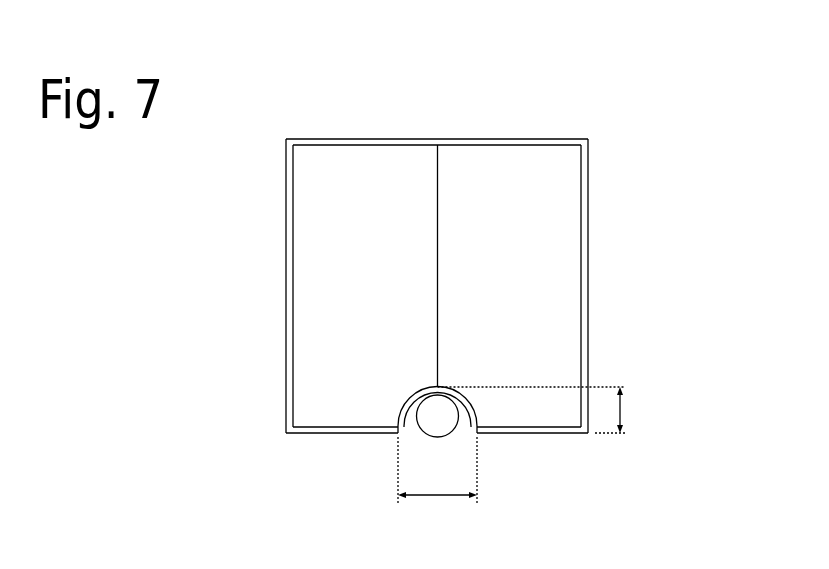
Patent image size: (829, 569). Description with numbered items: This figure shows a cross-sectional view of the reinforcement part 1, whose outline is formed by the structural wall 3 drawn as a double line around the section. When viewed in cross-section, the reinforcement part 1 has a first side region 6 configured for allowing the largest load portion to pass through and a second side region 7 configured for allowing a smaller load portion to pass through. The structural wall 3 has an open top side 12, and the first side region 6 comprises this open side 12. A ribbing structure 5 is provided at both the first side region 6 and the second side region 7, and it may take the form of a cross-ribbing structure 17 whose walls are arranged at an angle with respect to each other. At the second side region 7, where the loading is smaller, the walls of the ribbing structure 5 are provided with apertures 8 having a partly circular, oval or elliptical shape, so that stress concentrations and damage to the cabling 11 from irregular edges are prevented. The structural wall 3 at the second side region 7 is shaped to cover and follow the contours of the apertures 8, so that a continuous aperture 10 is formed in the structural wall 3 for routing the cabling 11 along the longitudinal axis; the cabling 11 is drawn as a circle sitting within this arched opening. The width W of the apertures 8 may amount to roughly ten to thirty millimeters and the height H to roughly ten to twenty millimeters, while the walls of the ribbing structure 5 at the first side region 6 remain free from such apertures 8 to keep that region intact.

The reinforcement part 1 is at (466, 274).
The structural wall 3 is at (588, 248).
The ribbing structure 5 is at (395, 244).
The first side region 6 is at (429, 126).
The second side region 7 is at (491, 461).
The apertures 8 is at (465, 390).
The continuous aperture 10 is at (498, 414).
The cabling 11 is at (398, 400).
The open side 12 is at (457, 204).
The cross-ribbing structure 17 is at (248, 286).